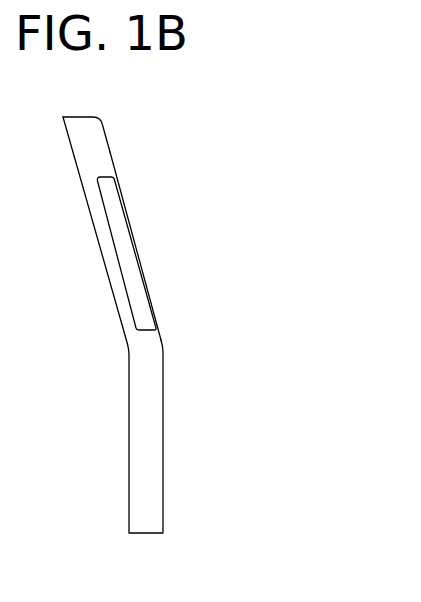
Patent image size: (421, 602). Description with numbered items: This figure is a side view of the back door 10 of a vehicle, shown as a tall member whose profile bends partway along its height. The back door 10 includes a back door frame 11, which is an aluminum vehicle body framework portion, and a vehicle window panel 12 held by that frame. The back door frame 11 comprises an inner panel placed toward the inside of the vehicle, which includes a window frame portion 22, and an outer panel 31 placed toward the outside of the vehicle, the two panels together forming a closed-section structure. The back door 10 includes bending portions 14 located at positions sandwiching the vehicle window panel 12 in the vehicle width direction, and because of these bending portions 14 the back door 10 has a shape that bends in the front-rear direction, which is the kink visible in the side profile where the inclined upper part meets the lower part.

The back door 10 is at (112, 138).
The back door frame 11 is at (105, 218).
The vehicle window panel 12 is at (133, 250).
The bending portion 14 is at (163, 343).
The window frame portion 22 is at (110, 253).
The outer panel 31 is at (113, 155).